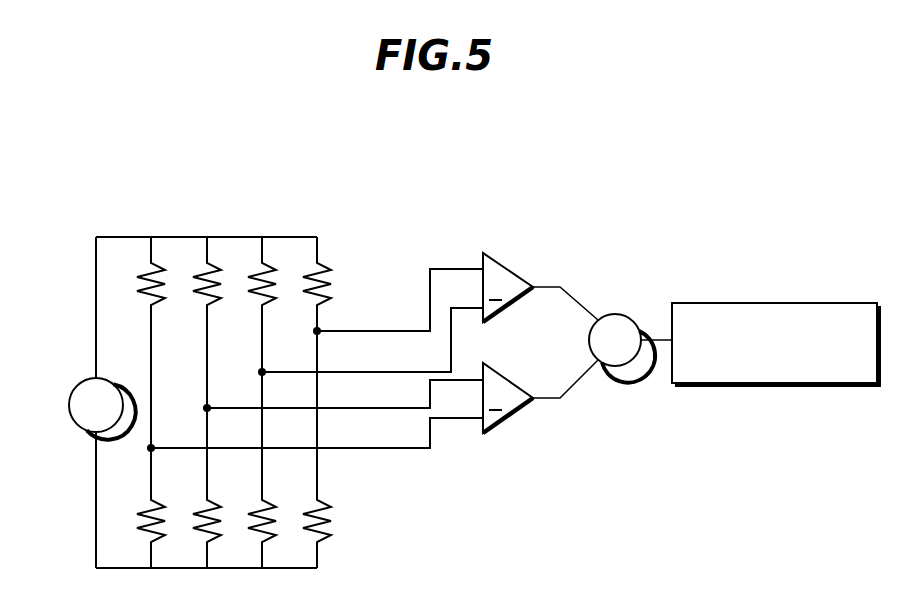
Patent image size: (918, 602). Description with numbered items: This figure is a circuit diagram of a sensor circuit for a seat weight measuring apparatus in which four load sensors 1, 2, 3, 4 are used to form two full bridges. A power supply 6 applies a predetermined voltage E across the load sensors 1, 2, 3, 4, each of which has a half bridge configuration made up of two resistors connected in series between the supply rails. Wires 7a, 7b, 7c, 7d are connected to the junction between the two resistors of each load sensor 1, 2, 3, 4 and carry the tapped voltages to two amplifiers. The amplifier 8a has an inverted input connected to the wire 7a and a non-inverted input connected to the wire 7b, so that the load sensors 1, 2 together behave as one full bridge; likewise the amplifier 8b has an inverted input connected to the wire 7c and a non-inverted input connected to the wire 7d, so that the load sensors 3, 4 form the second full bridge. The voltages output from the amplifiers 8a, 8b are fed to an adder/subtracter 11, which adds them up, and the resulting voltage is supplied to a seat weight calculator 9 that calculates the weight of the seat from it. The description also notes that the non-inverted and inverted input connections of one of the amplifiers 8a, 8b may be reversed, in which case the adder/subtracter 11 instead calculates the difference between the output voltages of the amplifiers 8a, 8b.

The load sensor 1 is at (155, 222).
The load sensor 2 is at (220, 359).
The load sensor 3 is at (275, 359).
The load sensor 4 is at (331, 359).
The power supply 6 is at (77, 386).
The wire 7a is at (337, 448).
The wire 7b is at (337, 408).
The wire 7c is at (337, 372).
The wire 7d is at (358, 331).
The amplifier 8a is at (497, 372).
The amplifier 8b is at (497, 262).
The seat weight calculator 9 is at (730, 303).
The adder/subtracter 11 is at (610, 316).